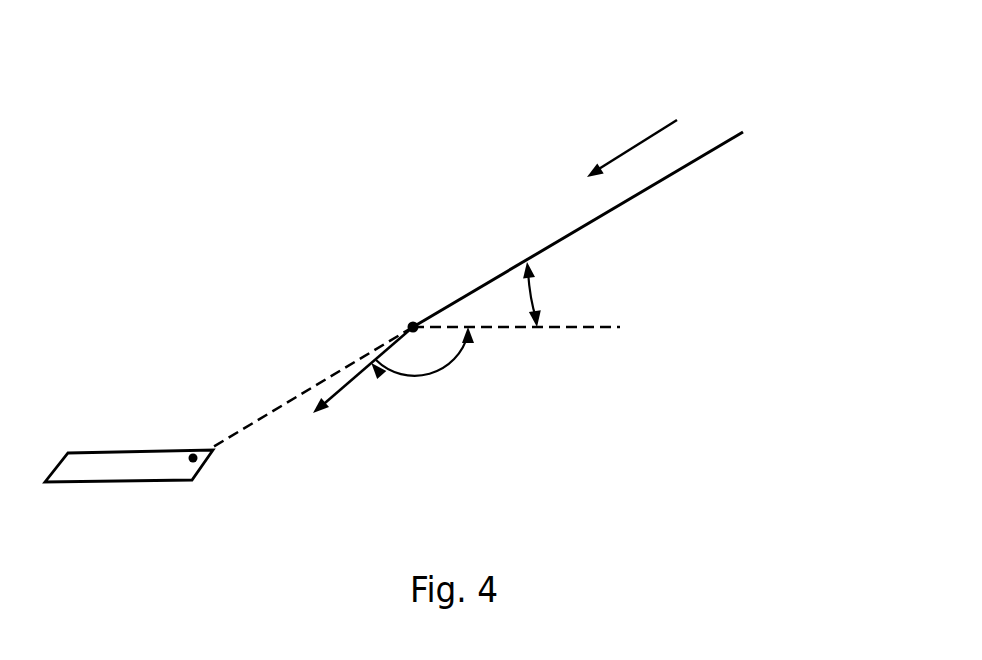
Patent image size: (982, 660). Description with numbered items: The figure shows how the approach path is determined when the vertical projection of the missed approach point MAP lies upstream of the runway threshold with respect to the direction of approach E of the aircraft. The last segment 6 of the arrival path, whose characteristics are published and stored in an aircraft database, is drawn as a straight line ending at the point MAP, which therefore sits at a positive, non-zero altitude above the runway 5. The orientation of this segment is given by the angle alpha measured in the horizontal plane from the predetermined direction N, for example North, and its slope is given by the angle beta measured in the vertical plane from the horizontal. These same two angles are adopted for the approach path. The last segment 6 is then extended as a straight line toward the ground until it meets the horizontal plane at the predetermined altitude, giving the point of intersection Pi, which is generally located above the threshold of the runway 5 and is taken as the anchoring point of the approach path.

The last segment of the arrival path 6 is at (564, 232).
The missed approach point MAP is at (410, 322).
The predetermined direction N is at (363, 386).
The angle of orientation alpha is at (422, 366).
The angle of slope beta is at (544, 294).
The direction of approach E is at (648, 138).
The runway 5 is at (98, 470).
The point of intersection Pi is at (193, 483).